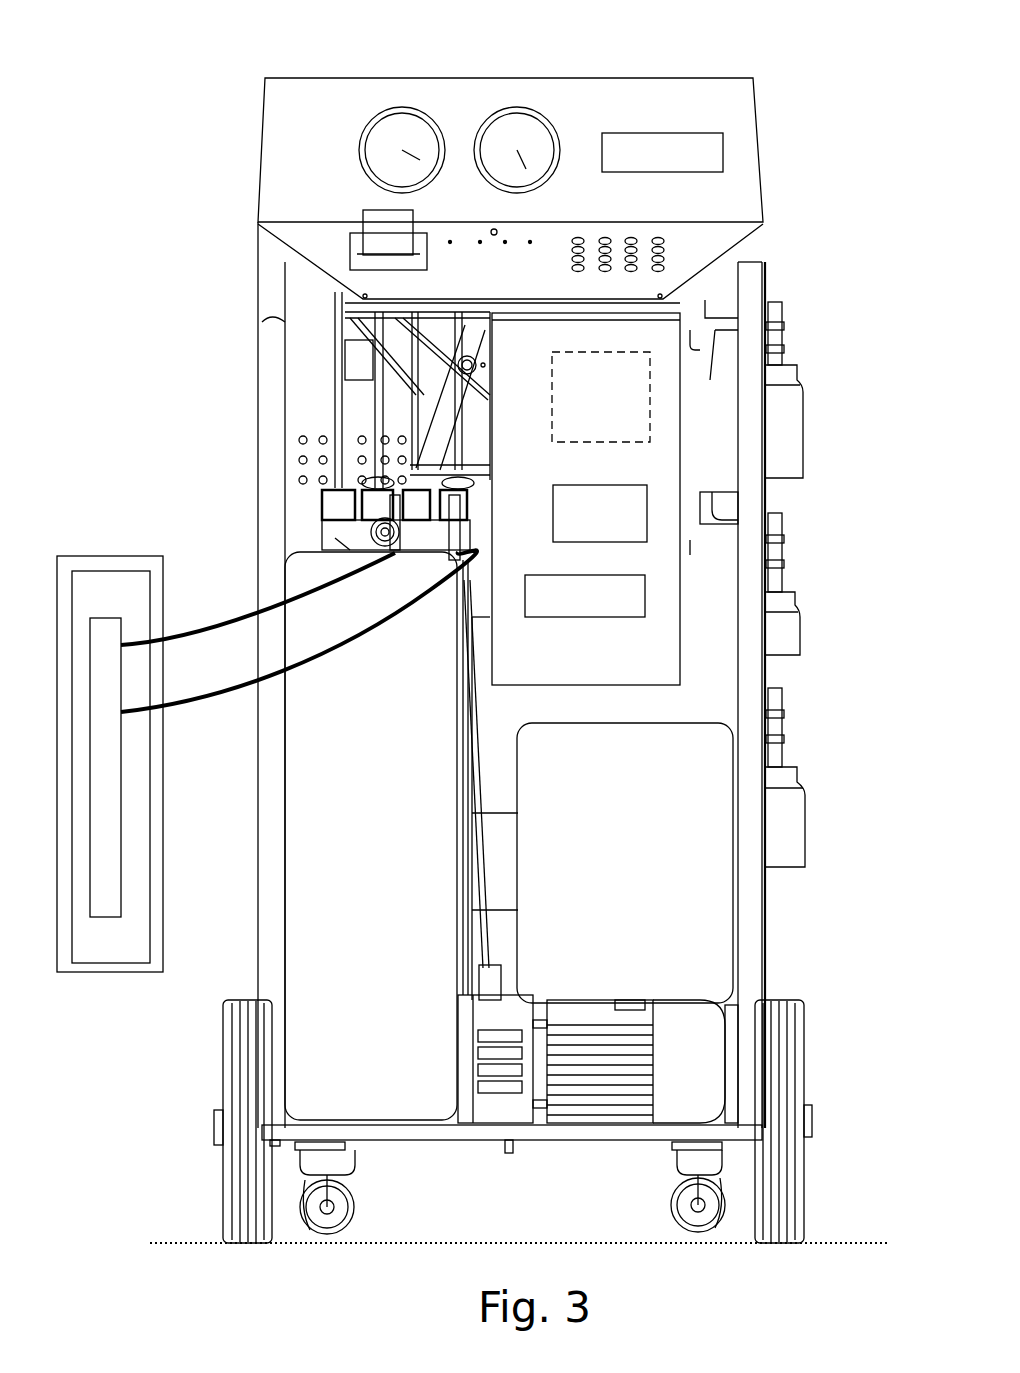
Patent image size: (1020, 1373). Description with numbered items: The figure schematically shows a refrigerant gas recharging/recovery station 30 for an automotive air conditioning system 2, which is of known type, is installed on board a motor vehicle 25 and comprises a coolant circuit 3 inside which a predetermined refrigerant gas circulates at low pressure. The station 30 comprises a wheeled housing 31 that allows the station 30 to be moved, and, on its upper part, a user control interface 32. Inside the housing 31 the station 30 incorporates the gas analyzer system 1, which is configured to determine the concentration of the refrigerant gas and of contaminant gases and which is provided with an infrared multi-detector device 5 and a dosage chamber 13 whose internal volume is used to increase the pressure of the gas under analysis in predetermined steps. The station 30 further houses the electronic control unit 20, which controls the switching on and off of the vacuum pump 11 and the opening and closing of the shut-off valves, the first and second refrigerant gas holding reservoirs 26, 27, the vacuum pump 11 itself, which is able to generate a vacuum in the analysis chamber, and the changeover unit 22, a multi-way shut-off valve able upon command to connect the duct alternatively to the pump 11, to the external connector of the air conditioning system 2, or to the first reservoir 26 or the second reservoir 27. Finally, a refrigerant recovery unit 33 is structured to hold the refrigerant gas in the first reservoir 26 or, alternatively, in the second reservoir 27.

The gas analyzer system 1 is at (665, 352).
The automotive air conditioning system 2 is at (94, 573).
The coolant circuit 3 is at (112, 770).
The infrared multi-detector device 5 is at (650, 595).
The vacuum pump 11 is at (745, 1043).
The dosage chamber 13 is at (650, 515).
The electronic control unit 20 is at (650, 383).
The changeover unit 22 is at (305, 507).
The motor vehicle 25 is at (81, 556).
The first refrigerant gas holding reservoir 26 is at (289, 806).
The second refrigerant gas holding reservoir 27 is at (735, 857).
The refrigerant gas recharging/recovery station 30 is at (818, 321).
The wheeled housing 31 is at (767, 254).
The user control interface 32 is at (336, 153).
The refrigerant recovery unit 33 is at (318, 390).